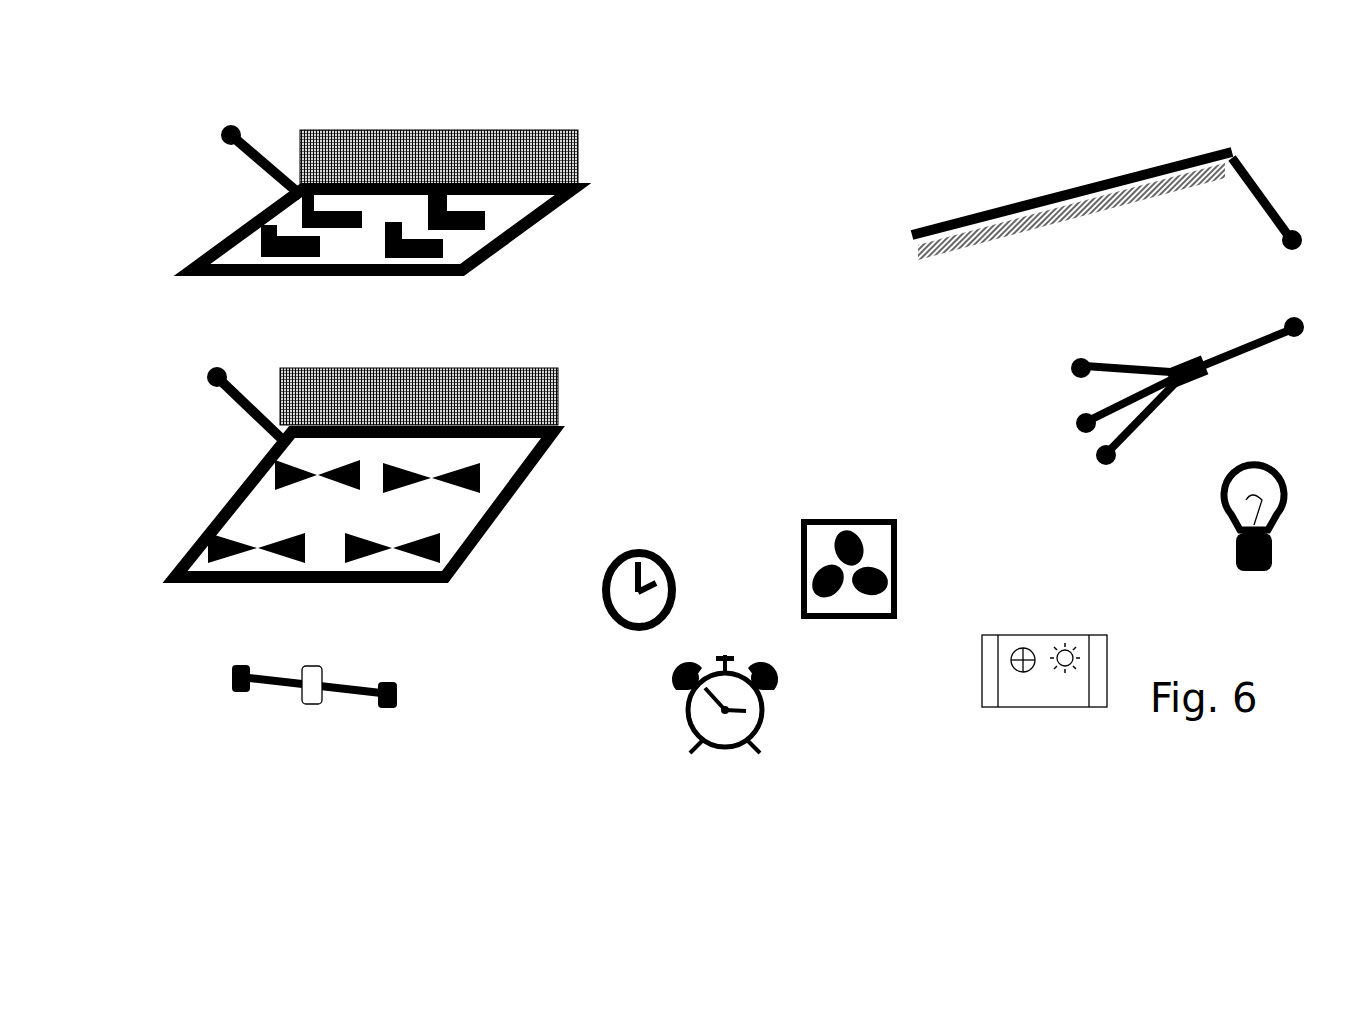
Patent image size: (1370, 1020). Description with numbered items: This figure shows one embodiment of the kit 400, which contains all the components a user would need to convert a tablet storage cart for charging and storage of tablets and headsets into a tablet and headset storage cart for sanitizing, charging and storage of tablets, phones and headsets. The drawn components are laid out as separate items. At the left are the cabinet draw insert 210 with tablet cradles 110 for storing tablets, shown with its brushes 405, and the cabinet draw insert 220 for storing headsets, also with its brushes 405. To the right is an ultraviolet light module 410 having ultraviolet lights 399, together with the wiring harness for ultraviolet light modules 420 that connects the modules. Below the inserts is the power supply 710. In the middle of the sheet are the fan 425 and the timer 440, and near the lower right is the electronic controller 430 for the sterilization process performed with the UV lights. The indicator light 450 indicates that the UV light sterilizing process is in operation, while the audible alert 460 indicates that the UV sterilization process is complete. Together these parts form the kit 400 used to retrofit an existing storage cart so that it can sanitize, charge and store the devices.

The tablet cradles 110 is at (449, 249).
The cabinet draw insert 210 is at (471, 201).
The cabinet draw insert 220 is at (491, 490).
The ultraviolet lights 399 is at (1068, 217).
The kit 400 is at (811, 347).
The brushes 405 is at (582, 160).
The ultraviolet light modules 410 is at (1107, 194).
The wiring harness for ultraviolet light modules 420 is at (1155, 335).
The fan 425 is at (886, 522).
The electronic controller 430 is at (1087, 632).
The timer 440 is at (667, 545).
The indicator light 450 is at (1290, 490).
The audible alert 460 is at (660, 703).
The power supply 710 is at (287, 715).